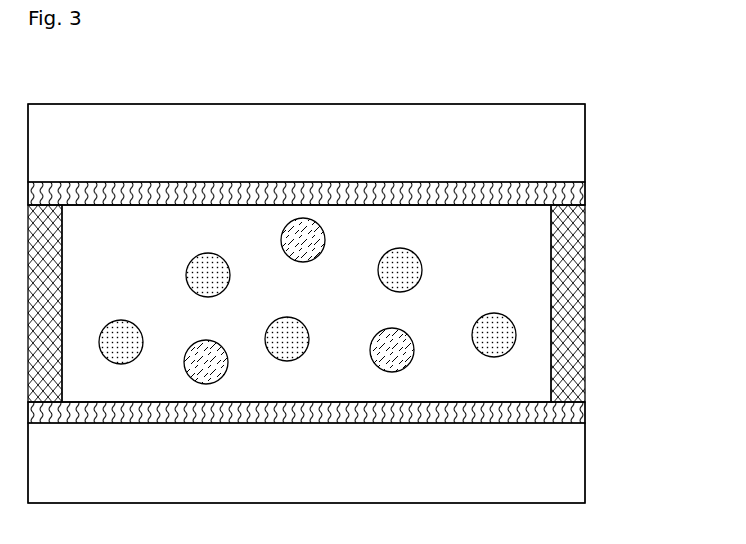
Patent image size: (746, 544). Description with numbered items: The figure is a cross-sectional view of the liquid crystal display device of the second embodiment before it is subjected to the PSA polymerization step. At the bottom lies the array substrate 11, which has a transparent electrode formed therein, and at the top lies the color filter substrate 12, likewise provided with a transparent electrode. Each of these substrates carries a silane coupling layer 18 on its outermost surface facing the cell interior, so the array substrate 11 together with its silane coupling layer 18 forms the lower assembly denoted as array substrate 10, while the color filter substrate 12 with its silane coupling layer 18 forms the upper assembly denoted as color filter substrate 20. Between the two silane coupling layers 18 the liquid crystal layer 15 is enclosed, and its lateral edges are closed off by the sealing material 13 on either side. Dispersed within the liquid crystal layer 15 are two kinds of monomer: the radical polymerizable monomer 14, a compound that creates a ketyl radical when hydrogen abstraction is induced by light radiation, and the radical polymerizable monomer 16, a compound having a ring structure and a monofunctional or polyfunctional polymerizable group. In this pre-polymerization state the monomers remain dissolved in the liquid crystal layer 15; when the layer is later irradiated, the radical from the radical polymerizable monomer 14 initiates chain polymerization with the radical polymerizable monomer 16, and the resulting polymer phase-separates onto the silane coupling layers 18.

The array substrate with silane coupling layer 10 is at (662, 400).
The array substrate 11 is at (570, 464).
The color filter substrate 12 is at (570, 147).
The sealing material 13 is at (569, 290).
The radical polymerizable monomer 14 is at (400, 262).
The liquid crystal layer 15 is at (124, 235).
The radical polymerizable monomer 16 is at (308, 233).
The silane coupling layer 18 is at (583, 193).
The color filter substrate with silane coupling layer 20 is at (662, 103).